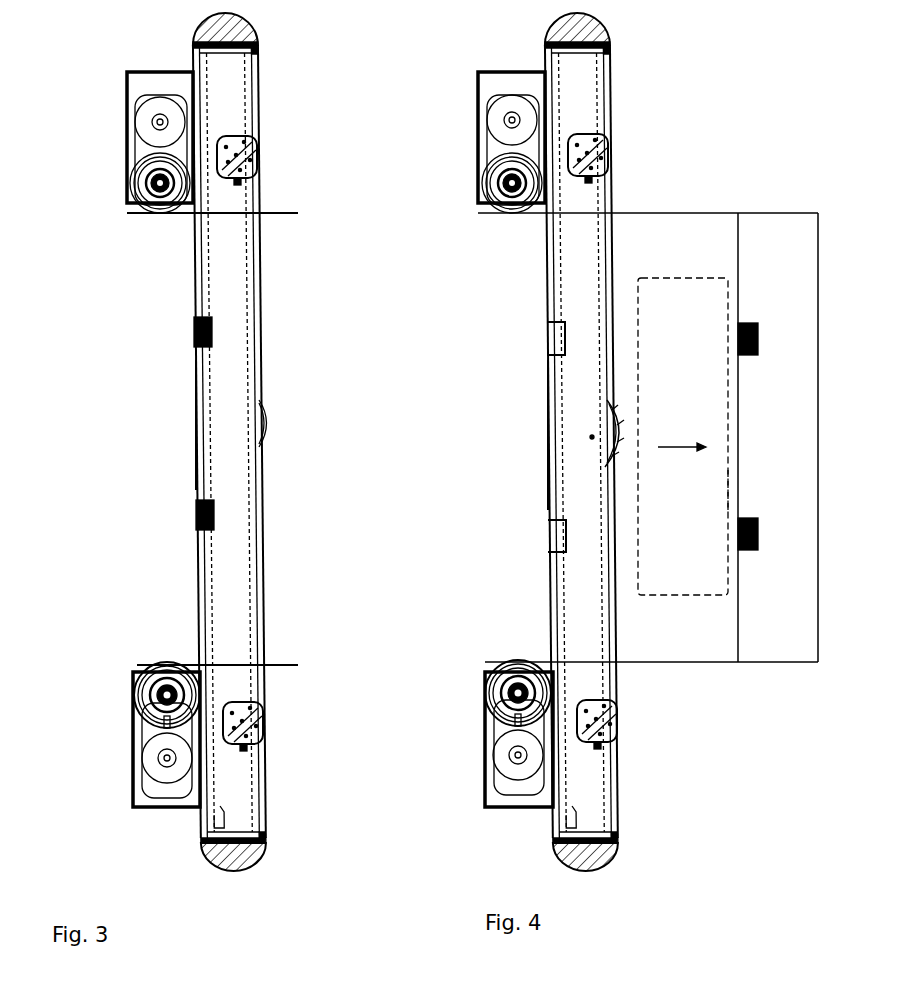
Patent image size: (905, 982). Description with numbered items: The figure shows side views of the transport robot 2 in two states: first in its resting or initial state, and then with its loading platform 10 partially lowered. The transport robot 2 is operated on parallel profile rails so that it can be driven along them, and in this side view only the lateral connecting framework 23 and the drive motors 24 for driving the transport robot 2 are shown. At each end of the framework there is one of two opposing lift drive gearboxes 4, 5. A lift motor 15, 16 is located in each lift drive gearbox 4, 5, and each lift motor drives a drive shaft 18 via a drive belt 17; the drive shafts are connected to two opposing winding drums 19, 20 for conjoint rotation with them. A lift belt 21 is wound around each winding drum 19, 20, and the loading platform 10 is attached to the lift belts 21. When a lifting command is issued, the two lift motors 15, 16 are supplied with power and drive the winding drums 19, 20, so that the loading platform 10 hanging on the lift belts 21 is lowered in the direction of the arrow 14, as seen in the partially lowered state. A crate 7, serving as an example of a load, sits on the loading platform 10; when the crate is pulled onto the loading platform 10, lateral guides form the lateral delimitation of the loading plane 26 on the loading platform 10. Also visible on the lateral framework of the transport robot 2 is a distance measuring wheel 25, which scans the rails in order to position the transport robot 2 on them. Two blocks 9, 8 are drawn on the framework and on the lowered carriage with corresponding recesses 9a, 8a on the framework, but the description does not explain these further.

In FIG. 3, the transport robot 2 is at (216, 66).
In FIG. 3, the lift drive gearbox 4 is at (132, 88).
In FIG. 3, the lift drive gearbox 5 is at (150, 800).
In FIG. 4, the crate 7 is at (712, 278).
In FIG. 3, the lower magnet 8 is at (197, 544).
In FIG. 4, the lower magnet 8 is at (740, 542).
In FIG. 4, the lower recess 8a is at (556, 537).
In FIG. 3, the upper magnet 9 is at (195, 336).
In FIG. 4, the upper magnet 9 is at (739, 330).
In FIG. 4, the upper recess 9a is at (556, 341).
In FIG. 4, the loading platform 10 is at (747, 423).
In FIG. 4, the arrow 14 is at (676, 441).
In FIG. 3, the lift motor 15 is at (140, 762).
In FIG. 4, the lift motor 15 is at (508, 764).
In FIG. 3, the lift motor 16 is at (145, 126).
In FIG. 4, the lift motor 16 is at (497, 124).
In FIG. 3, the drive belt 17 is at (136, 150).
In FIG. 4, the drive belt 17 is at (488, 148).
In FIG. 3, the drive shaft 18 is at (168, 120).
In FIG. 4, the drive shaft 18 is at (518, 118).
In FIG. 3, the winding drum 19 is at (138, 690).
In FIG. 4, the winding drum 19 is at (490, 690).
In FIG. 3, the winding drum 20 is at (140, 188).
In FIG. 4, the winding drum 20 is at (492, 186).
In FIG. 4, the lift belt 21 is at (683, 212).
In FIG. 3, the lateral connecting framework 23 is at (210, 441).
In FIG. 4, the lateral connecting framework 23 is at (553, 397).
In FIG. 3, the drive motor 24 is at (258, 160).
In FIG. 4, the drive motor 24 is at (592, 441).
In FIG. 3, the distance measuring wheel 25 is at (268, 427).
In FIG. 4, the distance measuring wheel 25 is at (618, 418).
In FIG. 4, the loading plane 26 is at (727, 504).